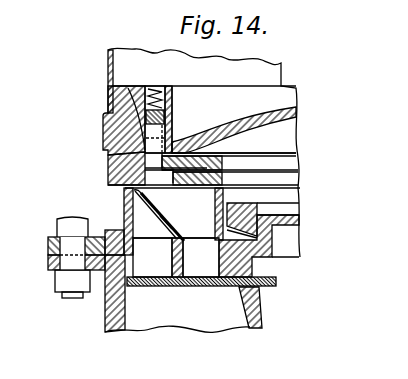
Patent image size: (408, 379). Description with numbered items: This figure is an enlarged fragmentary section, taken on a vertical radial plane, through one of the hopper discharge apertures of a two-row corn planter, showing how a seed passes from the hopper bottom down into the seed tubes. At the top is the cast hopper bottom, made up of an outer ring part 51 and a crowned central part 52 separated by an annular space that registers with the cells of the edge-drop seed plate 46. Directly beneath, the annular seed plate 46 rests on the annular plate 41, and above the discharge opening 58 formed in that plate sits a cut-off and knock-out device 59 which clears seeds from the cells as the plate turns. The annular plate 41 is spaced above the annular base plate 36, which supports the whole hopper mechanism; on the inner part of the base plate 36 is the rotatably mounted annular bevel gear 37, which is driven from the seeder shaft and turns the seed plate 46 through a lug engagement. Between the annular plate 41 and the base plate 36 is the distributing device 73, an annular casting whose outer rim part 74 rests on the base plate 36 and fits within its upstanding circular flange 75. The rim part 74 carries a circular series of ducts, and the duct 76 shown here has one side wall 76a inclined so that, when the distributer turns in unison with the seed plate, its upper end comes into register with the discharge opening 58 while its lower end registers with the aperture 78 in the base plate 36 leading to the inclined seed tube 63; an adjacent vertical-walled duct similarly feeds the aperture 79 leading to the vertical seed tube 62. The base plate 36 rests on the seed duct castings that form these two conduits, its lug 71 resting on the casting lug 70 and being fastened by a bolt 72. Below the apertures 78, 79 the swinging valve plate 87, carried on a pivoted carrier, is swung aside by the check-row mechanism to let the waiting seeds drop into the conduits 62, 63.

The annular base plate 36 is at (292, 237).
The annular bevel gear 37 is at (297, 208).
The annular plate 41 is at (108, 165).
The annular seed plate 46 is at (221, 155).
The outer ring part 51 is at (108, 140).
The crowned central part 52 is at (244, 111).
The discharge opening 58 is at (163, 180).
The cut-off and knock-out device 59 is at (172, 117).
The vertical seed tube 62 is at (152, 329).
The inclined seed tube 63 is at (259, 305).
The lug 70 is at (50, 268).
The lug 71 is at (50, 244).
The bolt 72 is at (75, 299).
The distributing device 73 is at (124, 192).
The outer rim part 74 is at (133, 236).
The upstanding circular flange 75 is at (116, 232).
The distributer duct 76 is at (170, 218).
The inclined side wall 76a is at (172, 229).
The aperture 78 is at (201, 257).
The aperture 79 is at (152, 257).
The swinging valve plate 87 is at (277, 282).